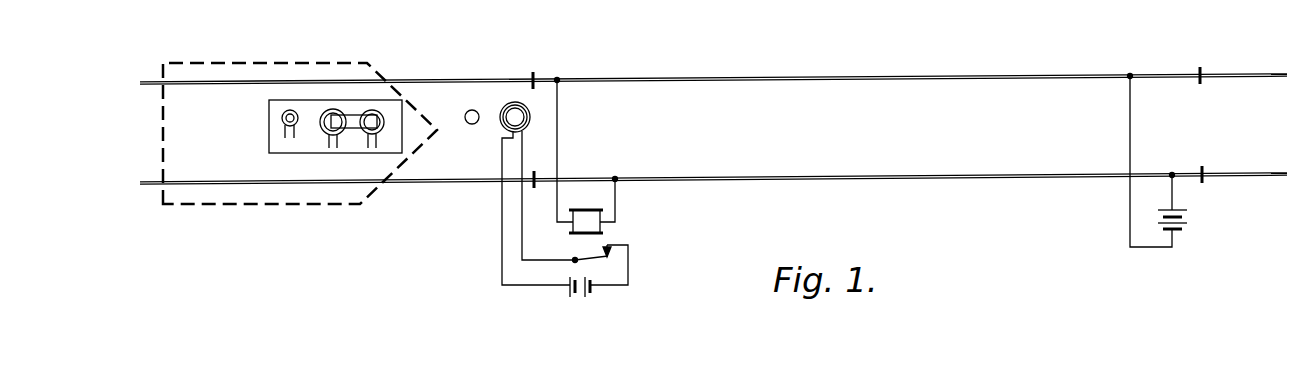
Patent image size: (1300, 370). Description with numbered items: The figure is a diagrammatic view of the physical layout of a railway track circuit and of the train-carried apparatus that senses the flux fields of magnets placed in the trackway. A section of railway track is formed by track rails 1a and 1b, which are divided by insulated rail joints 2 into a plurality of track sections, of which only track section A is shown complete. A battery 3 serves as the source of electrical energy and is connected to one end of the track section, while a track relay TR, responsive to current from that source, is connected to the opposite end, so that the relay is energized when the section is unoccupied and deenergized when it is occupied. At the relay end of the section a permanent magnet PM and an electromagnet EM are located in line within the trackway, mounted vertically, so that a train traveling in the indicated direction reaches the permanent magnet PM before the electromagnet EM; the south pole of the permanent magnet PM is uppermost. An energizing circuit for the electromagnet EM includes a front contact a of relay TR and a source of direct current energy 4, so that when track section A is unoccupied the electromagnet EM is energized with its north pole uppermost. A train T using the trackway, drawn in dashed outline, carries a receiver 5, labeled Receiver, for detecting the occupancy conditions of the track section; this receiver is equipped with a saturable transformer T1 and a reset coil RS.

The track rail 1a is at (1268, 67).
The track rail 1b is at (1268, 177).
The insulated rail joints 2 is at (537, 73).
The battery 3 is at (1177, 235).
The source of direct current energy 4 is at (583, 297).
The receiver 5 is at (283, 140).
The track section A is at (765, 133).
The train T is at (287, 62).
The receiver Receiver is at (269, 120).
The reset coil RS is at (297, 132).
The saturable transformer T1 is at (356, 132).
The permanent magnet PM is at (473, 109).
The electromagnet EM is at (505, 121).
The track relay TR is at (586, 156).
The front contact a is at (601, 262).